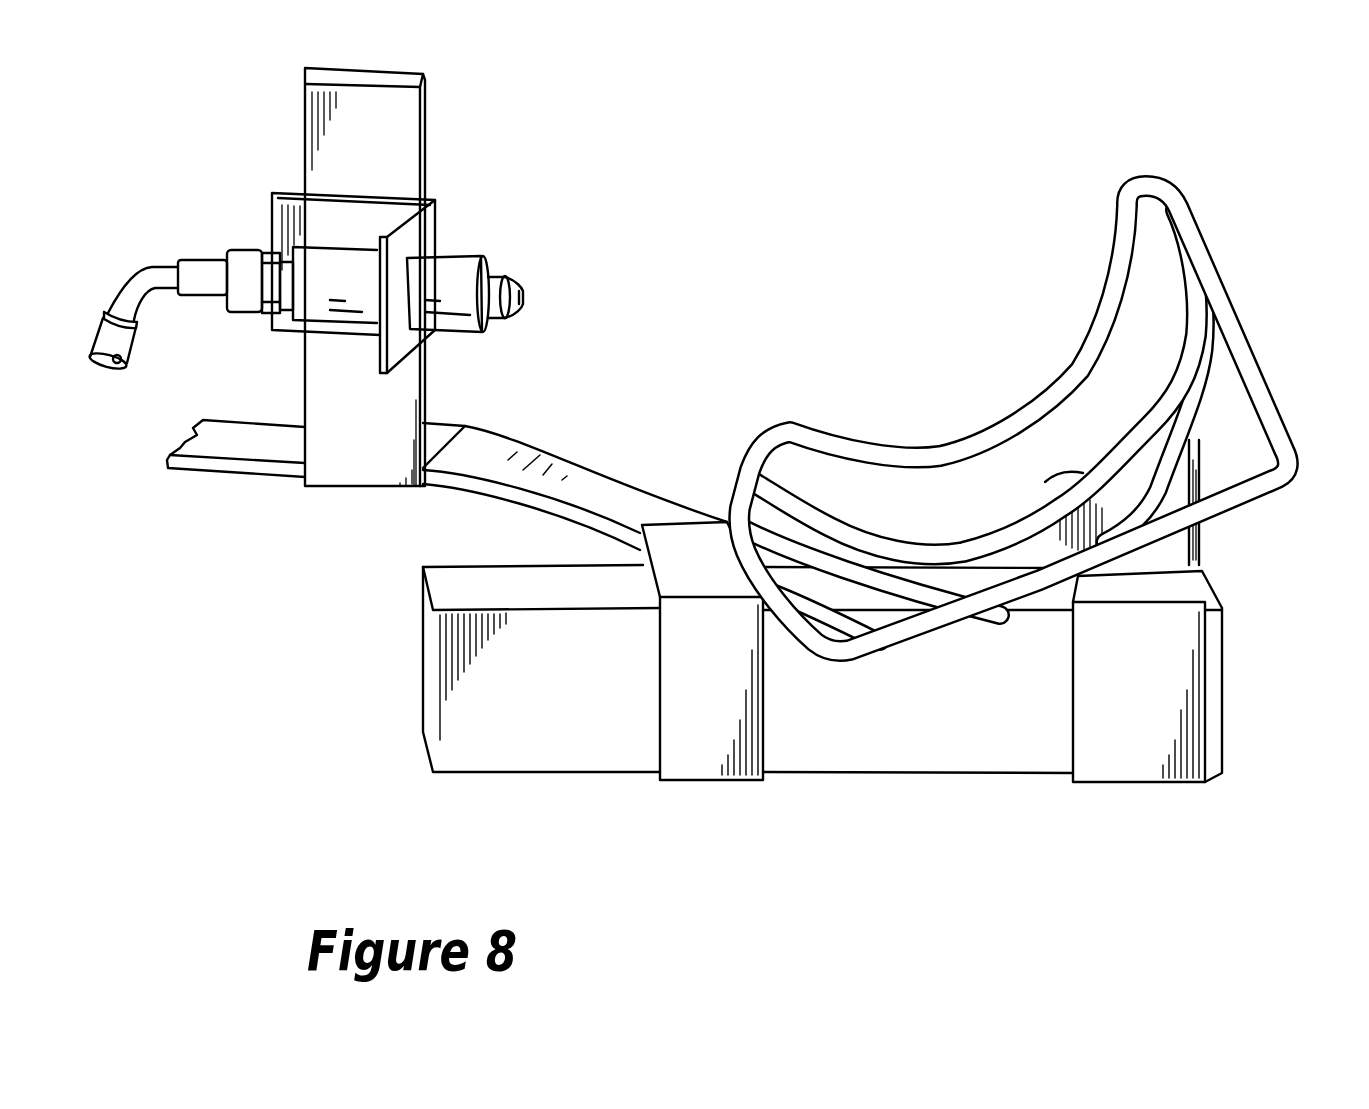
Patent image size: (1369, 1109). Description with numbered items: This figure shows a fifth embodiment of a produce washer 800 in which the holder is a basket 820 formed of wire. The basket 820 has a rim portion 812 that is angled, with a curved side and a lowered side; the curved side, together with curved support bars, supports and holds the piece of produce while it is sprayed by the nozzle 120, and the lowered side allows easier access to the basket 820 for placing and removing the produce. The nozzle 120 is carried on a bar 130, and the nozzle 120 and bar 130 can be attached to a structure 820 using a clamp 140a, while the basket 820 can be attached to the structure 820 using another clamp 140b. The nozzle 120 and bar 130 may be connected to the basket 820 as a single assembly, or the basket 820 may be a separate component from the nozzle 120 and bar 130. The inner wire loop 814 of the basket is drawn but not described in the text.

The produce washer 800 is at (973, 154).
The nozzle 120 is at (518, 281).
The bar 130 is at (503, 437).
The clamp 140a is at (683, 781).
The clamp 140b is at (1110, 783).
The rim portion 812 is at (1107, 288).
The inner wire loop 814 is at (1068, 487).
The basket 820 is at (1213, 578).